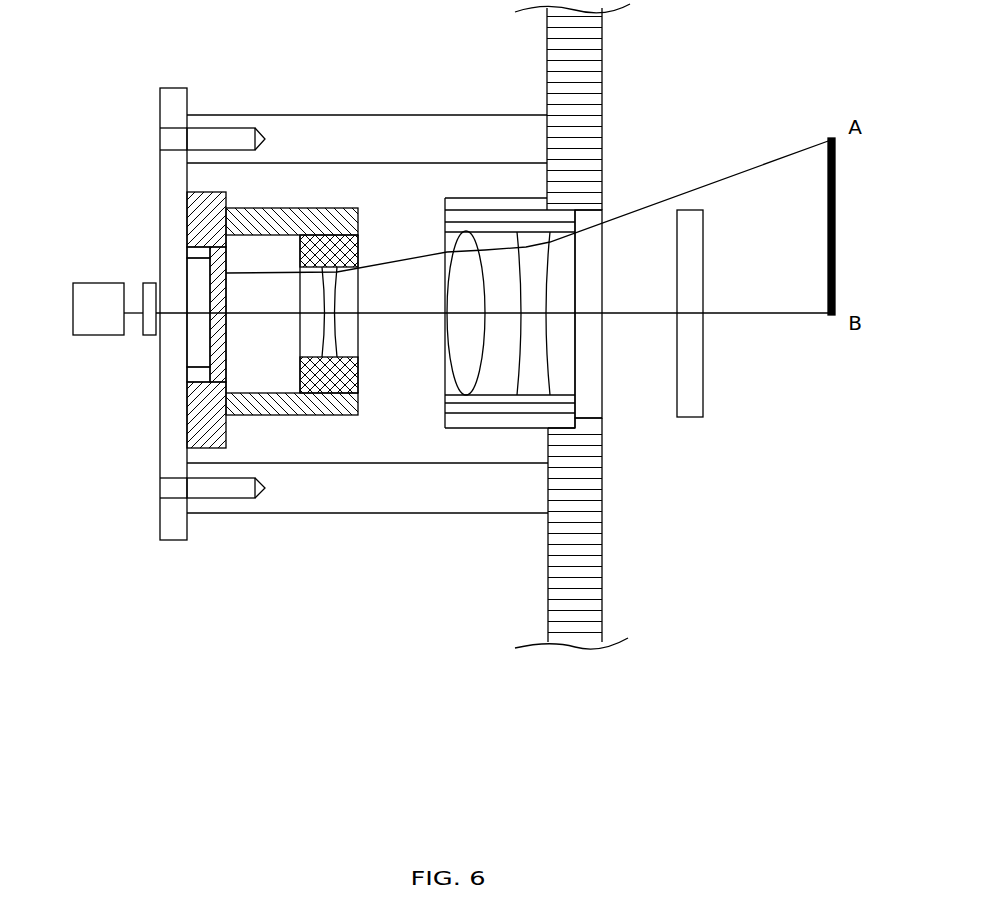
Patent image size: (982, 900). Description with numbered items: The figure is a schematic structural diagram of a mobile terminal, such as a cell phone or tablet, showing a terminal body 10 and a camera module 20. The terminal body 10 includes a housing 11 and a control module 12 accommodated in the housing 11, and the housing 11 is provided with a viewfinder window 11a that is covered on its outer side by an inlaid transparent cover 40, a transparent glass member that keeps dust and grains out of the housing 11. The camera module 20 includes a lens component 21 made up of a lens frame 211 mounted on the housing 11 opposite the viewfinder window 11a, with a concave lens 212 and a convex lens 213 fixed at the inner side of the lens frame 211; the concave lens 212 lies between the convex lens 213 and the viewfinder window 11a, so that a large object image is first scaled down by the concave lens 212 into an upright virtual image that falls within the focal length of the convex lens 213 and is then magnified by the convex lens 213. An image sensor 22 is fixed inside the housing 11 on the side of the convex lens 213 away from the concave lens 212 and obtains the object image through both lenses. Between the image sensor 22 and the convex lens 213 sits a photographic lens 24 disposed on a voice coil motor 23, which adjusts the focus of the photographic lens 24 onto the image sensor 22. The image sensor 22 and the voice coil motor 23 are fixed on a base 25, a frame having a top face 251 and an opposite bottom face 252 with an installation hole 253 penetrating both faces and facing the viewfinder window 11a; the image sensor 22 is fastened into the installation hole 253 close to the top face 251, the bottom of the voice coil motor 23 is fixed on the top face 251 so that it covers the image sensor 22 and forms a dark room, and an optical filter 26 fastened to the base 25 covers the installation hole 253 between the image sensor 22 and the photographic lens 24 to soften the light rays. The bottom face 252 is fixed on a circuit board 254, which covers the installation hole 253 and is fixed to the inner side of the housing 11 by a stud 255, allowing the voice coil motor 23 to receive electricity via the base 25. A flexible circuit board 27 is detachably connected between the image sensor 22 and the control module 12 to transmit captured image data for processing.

The terminal body 10 is at (602, 90).
The housing 11 is at (585, 605).
The viewfinder window 11a is at (593, 220).
The control module 12 is at (72, 307).
The camera module 20 is at (313, 374).
The lens component 21 is at (495, 424).
The lens frame 211 is at (505, 413).
The concave lens 212 is at (542, 388).
The convex lens 213 is at (465, 373).
The image sensor 22 is at (198, 350).
The voice coil motor 23 is at (287, 412).
The photographic lens 24 is at (332, 413).
The base 25 is at (217, 432).
The optical filter 26 is at (218, 370).
The flexible circuit board 27 is at (147, 337).
The transparent cover 40 is at (692, 377).
The top face 251 is at (191, 389).
The bottom face 252 is at (226, 203).
The installation hole 253 is at (197, 252).
The circuit board 254 is at (172, 93).
The stud 255 is at (372, 130).